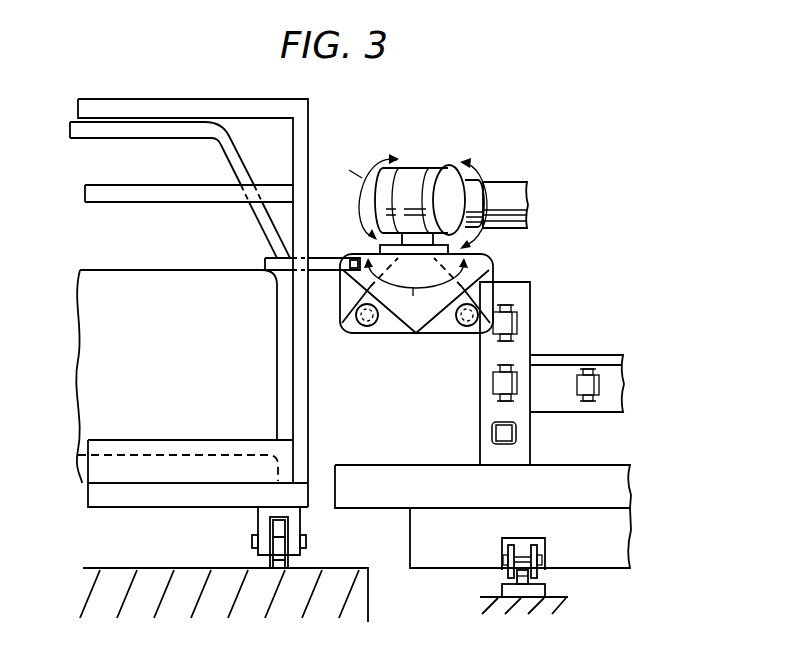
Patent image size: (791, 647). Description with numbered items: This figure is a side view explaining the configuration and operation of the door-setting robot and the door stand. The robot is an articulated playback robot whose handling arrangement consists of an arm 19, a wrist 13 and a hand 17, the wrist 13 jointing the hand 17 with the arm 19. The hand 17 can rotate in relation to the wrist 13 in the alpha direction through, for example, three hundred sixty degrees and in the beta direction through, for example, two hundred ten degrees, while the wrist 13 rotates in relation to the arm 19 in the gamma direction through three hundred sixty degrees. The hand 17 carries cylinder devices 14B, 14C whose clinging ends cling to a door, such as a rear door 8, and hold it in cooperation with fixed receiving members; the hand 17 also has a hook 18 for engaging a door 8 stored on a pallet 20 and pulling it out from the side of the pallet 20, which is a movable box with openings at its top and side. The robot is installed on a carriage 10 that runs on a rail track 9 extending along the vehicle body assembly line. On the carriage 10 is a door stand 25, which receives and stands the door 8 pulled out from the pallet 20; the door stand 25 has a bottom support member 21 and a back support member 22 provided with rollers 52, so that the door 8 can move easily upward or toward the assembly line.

The pallet 20 is at (296, 97).
The rear door 8 is at (243, 163).
The hook 18 is at (341, 256).
The hand 17 is at (500, 262).
The cylinder device 14B is at (366, 327).
The cylinder device 14C is at (469, 327).
The wrist 13 is at (442, 160).
The arm 19 is at (504, 182).
The back support member 22 is at (482, 408).
The roller 52 is at (517, 434).
The door stand 25 is at (579, 348).
The bottom support member 21 is at (399, 463).
The carriage 10 is at (427, 537).
The rail track 9 is at (545, 588).